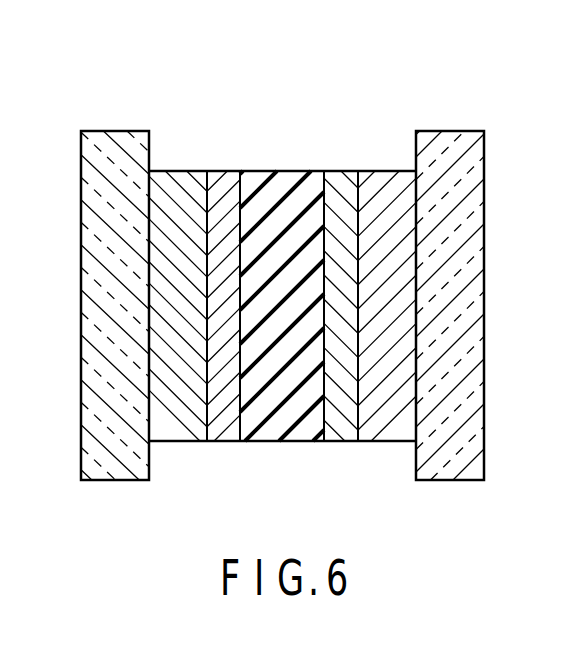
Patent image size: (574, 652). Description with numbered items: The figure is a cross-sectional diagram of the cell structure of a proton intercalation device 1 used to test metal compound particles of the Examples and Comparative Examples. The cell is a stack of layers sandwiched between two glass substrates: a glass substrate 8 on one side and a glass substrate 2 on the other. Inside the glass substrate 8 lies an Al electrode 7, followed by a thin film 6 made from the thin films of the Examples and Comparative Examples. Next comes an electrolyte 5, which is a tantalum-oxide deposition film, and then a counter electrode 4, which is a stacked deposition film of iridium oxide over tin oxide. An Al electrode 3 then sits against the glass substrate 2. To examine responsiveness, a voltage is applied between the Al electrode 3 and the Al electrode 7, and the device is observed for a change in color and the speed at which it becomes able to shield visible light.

The proton intercalation device 1 is at (94, 100).
The glass substrate 2 is at (484, 276).
The Al electrode 3 is at (378, 443).
The counter electrode 4 is at (341, 170).
The electrolyte 5 is at (280, 443).
The thin film 6 is at (220, 170).
The Al electrode 7 is at (181, 443).
The glass substrate 8 is at (81, 278).